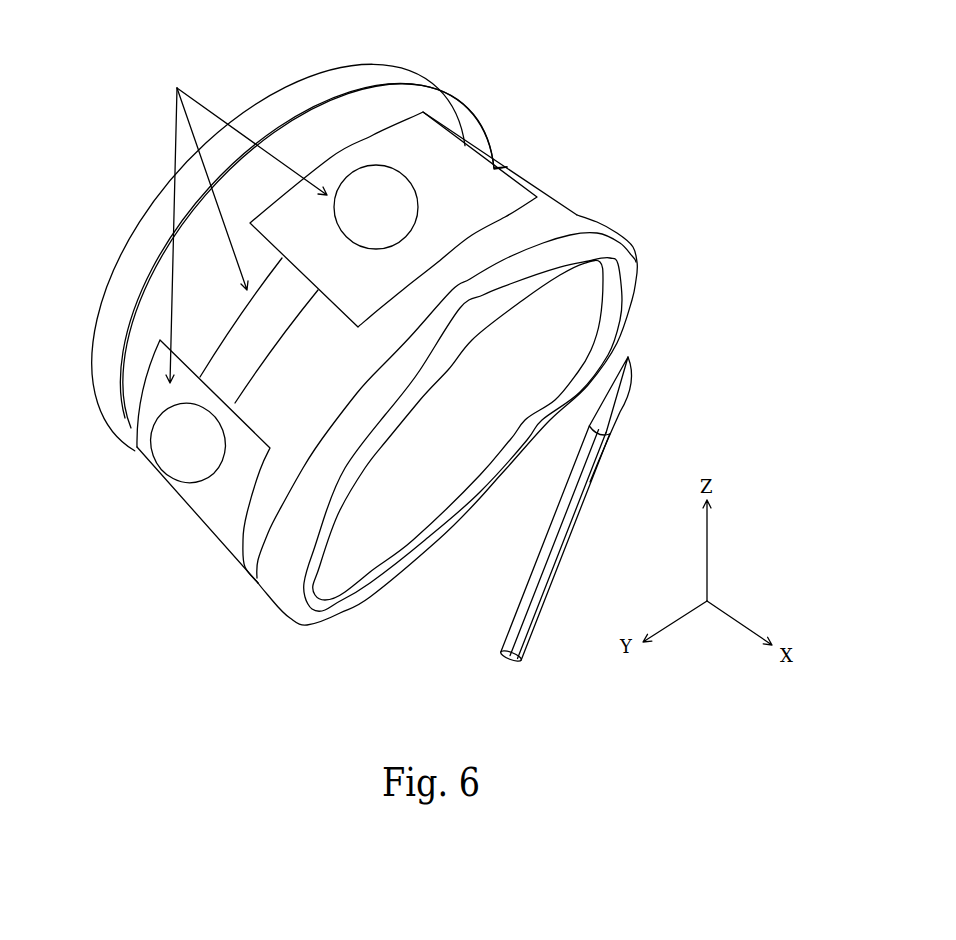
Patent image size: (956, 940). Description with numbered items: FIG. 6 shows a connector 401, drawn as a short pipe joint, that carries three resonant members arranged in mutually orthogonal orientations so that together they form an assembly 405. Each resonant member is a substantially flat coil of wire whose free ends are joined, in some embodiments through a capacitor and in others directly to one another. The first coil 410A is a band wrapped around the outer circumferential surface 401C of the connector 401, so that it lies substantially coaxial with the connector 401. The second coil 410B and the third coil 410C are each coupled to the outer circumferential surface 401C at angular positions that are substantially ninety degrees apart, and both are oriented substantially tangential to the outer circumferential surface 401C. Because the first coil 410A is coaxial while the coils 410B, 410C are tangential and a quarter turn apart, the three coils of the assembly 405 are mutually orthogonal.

The connector 401 is at (597, 227).
The outer circumferential surface 401C is at (248, 543).
The assembly 405 is at (581, 162).
The first coil 410A is at (235, 352).
The second coil 410B is at (155, 448).
The third coil 410C is at (413, 177).